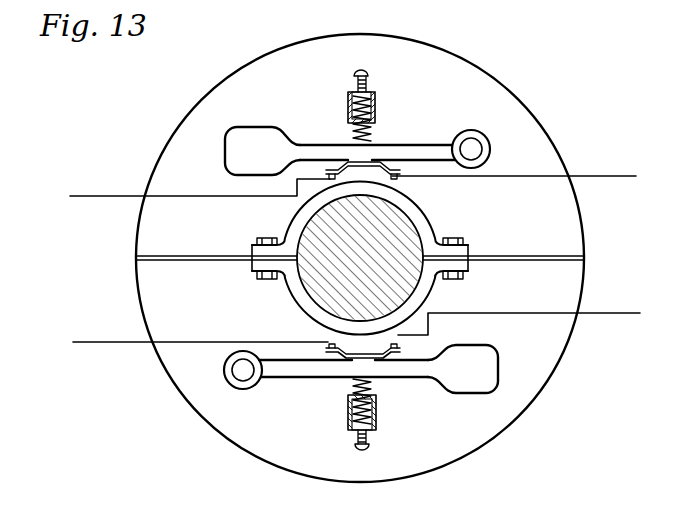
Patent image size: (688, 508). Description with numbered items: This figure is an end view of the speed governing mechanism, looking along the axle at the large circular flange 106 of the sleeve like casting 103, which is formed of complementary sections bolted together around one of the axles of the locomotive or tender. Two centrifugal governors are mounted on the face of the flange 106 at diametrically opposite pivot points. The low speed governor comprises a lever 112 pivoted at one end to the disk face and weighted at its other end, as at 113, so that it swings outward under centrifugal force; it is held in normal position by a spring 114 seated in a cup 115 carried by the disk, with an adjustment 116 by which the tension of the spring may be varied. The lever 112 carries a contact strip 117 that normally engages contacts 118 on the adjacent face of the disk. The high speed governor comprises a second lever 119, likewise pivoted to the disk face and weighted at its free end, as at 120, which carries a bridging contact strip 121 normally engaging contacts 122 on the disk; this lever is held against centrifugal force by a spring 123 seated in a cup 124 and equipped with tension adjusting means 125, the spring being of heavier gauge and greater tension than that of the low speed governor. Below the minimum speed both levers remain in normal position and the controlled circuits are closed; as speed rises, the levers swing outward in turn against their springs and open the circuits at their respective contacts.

The sleeve like casting 103 is at (298, 300).
The circular flange 106 is at (507, 102).
The lever 112 is at (280, 376).
The weighted end 113 is at (463, 369).
The spring 114 is at (378, 412).
The cup 115 is at (350, 424).
The adjustment 116 is at (359, 448).
The contact strip 117 is at (392, 360).
The contacts 118 is at (333, 338).
The second lever 119 is at (428, 146).
The weighted end 120 is at (262, 151).
The bridging contact strip 121 is at (348, 161).
The contacts 122 is at (405, 184).
The spring 123 is at (376, 108).
The cup 124 is at (347, 100).
The tension adjusting means 125 is at (369, 74).